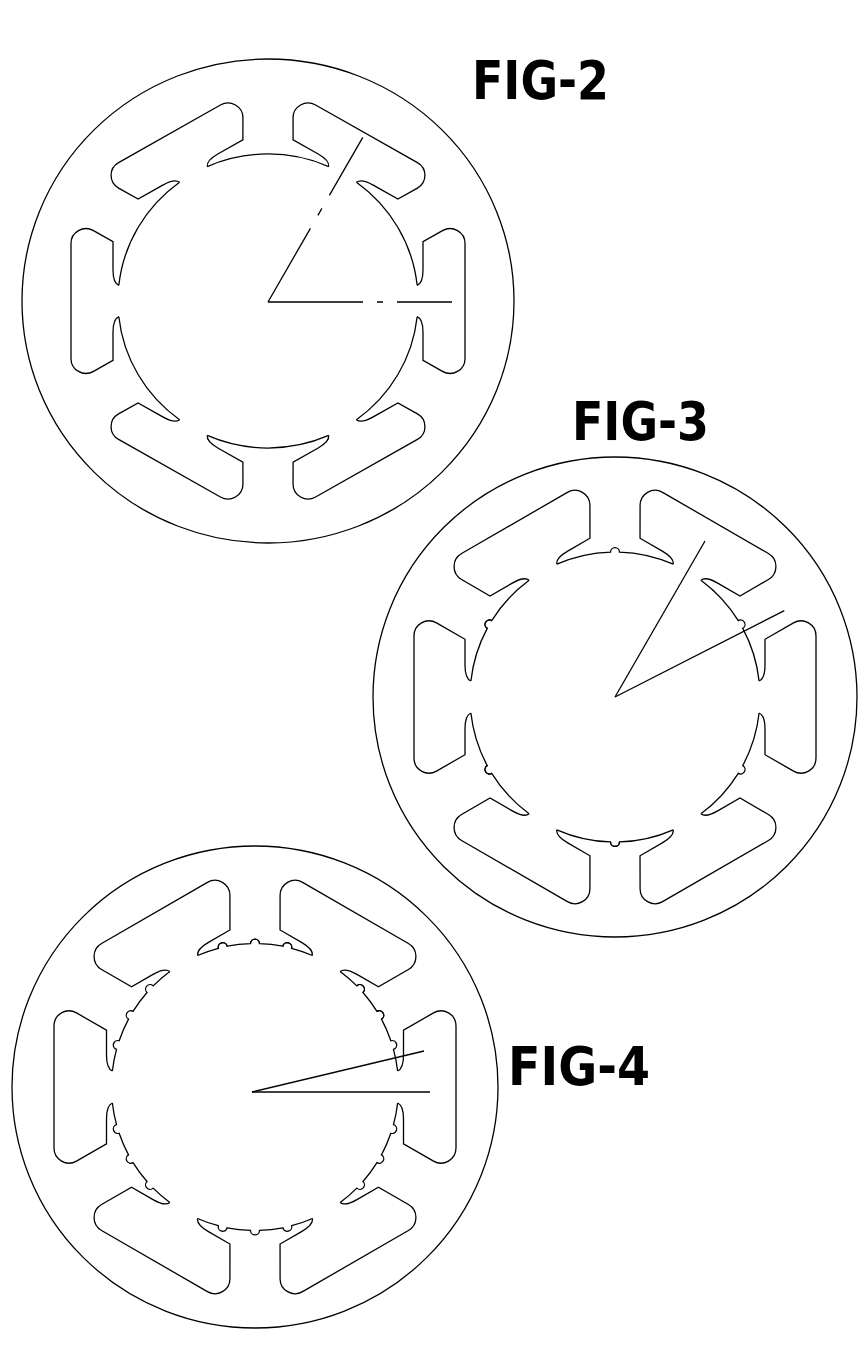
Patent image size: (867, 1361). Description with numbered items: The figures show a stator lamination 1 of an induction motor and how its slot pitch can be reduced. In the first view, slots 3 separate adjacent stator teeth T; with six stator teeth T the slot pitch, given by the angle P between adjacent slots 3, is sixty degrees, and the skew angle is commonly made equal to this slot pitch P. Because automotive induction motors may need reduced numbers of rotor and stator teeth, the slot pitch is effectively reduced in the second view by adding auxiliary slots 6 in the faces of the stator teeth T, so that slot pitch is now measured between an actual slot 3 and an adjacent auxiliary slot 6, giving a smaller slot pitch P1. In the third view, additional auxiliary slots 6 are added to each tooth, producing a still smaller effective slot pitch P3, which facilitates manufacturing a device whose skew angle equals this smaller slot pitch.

In FIG. 2, the stator lamination pole 1 is at (293, 47).
In FIG. 2, the slot 3 is at (207, 167).
In FIG. 3, the slot 3 is at (557, 564).
In FIG. 4, the slot 3 is at (198, 956).
In FIG. 3, the auxiliary slot 6 is at (493, 629).
In FIG. 4, the auxiliary slot 6 is at (374, 1018).
In FIG. 2, the stator tooth T is at (62, 151).
In FIG. 2, the slot pitch P is at (314, 231).
In FIG. 3, the slot pitch P1 is at (676, 663).
In FIG. 4, the slot pitch P3 is at (308, 1040).